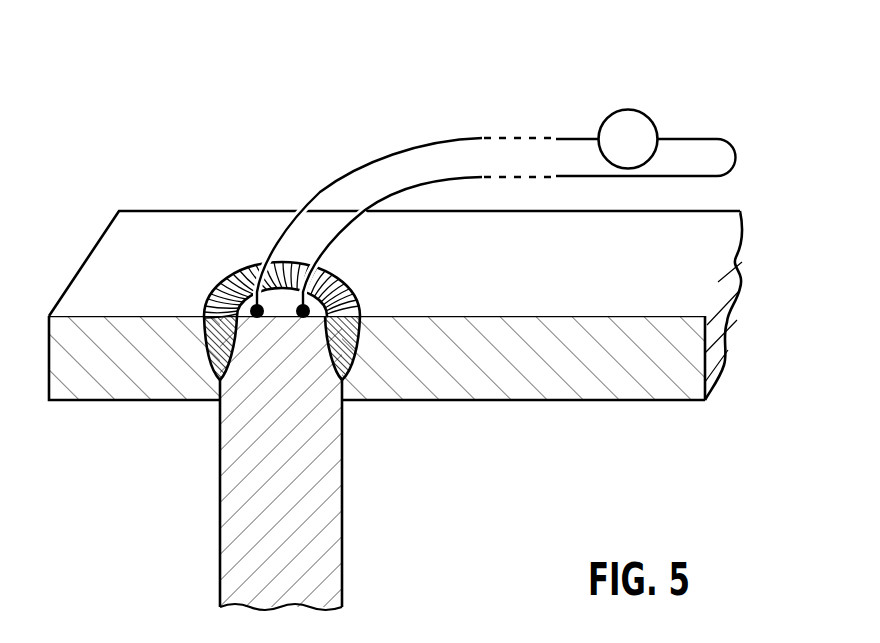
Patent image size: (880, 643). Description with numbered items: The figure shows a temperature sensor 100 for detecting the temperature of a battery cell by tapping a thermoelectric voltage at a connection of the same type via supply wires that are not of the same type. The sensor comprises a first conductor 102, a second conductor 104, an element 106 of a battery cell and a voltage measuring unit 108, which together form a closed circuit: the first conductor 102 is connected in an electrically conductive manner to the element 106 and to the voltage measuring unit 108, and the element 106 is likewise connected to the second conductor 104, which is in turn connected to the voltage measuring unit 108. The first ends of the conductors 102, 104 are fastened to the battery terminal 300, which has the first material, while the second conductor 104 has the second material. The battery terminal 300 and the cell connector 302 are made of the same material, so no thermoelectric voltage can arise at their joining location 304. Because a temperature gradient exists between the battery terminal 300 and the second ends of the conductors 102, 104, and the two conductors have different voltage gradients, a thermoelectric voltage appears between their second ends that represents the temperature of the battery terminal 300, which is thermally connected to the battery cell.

The temperature sensor 100 is at (251, 120).
The first conductor 102 is at (363, 162).
The second conductor 104 is at (708, 180).
The element of a battery cell 106 is at (170, 223).
The voltage measuring unit 108 is at (628, 110).
The battery terminal 300 is at (320, 500).
The cell connector 302 is at (532, 368).
The joining location 304 is at (205, 355).